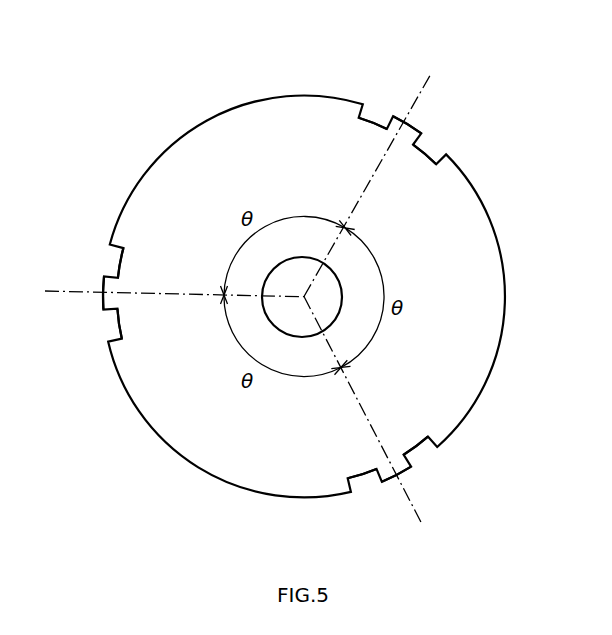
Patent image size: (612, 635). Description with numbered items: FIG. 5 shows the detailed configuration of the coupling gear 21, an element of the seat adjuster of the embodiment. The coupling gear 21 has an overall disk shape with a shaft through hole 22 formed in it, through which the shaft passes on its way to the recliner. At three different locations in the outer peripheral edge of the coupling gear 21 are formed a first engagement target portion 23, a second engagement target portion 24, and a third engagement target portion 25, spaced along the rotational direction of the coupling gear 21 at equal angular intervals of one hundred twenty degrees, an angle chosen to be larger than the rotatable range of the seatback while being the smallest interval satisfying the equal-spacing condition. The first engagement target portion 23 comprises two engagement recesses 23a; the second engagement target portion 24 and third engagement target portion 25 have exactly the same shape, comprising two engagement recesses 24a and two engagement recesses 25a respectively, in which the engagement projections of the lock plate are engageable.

The coupling gear 21 is at (213, 115).
The shaft through hole 22 is at (340, 278).
The first engagement target portion 23 is at (426, 112).
The engagement recesses 23a is at (371, 117).
The second engagement target portion 24 is at (84, 275).
The engagement recesses 24a is at (118, 260).
The third engagement target portion 25 is at (414, 488).
The engagement recesses 25a is at (419, 446).